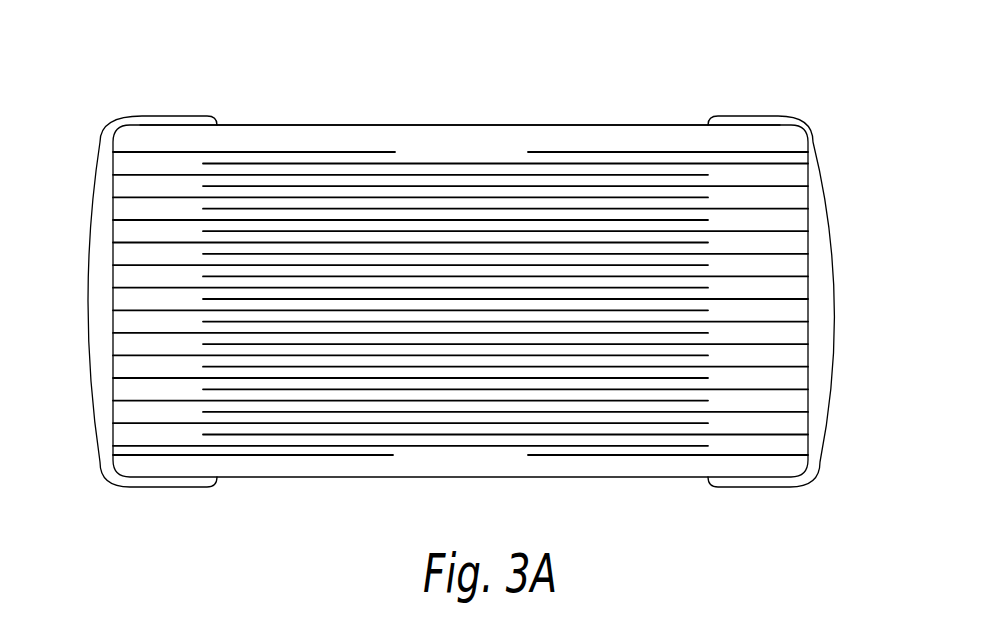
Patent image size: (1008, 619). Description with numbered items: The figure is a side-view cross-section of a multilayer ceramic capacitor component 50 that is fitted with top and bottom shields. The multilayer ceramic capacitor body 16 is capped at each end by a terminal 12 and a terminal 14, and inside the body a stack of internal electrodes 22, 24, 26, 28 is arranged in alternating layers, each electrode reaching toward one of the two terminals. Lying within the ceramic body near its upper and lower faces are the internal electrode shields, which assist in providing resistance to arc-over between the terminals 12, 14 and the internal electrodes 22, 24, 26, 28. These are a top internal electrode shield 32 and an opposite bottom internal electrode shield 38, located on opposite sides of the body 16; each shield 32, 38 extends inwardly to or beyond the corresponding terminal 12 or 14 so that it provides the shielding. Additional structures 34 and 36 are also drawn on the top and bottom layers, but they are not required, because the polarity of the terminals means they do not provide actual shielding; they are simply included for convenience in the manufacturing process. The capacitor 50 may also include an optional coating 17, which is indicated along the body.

The multilayer ceramic capacitor component 50 is at (668, 67).
The terminal 12 is at (148, 117).
The terminal 14 is at (787, 117).
The multilayer ceramic capacitor body 16 is at (313, 125).
The coating 17 is at (367, 125).
The internal electrode 22 is at (430, 163).
The internal electrode 24 is at (137, 177).
The internal electrode 26 is at (778, 188).
The internal electrode 28 is at (135, 446).
The top internal electrode shield 32 is at (143, 151).
The additional structure 34 is at (668, 152).
The additional structure 36 is at (273, 455).
The bottom internal electrode shield 38 is at (643, 455).